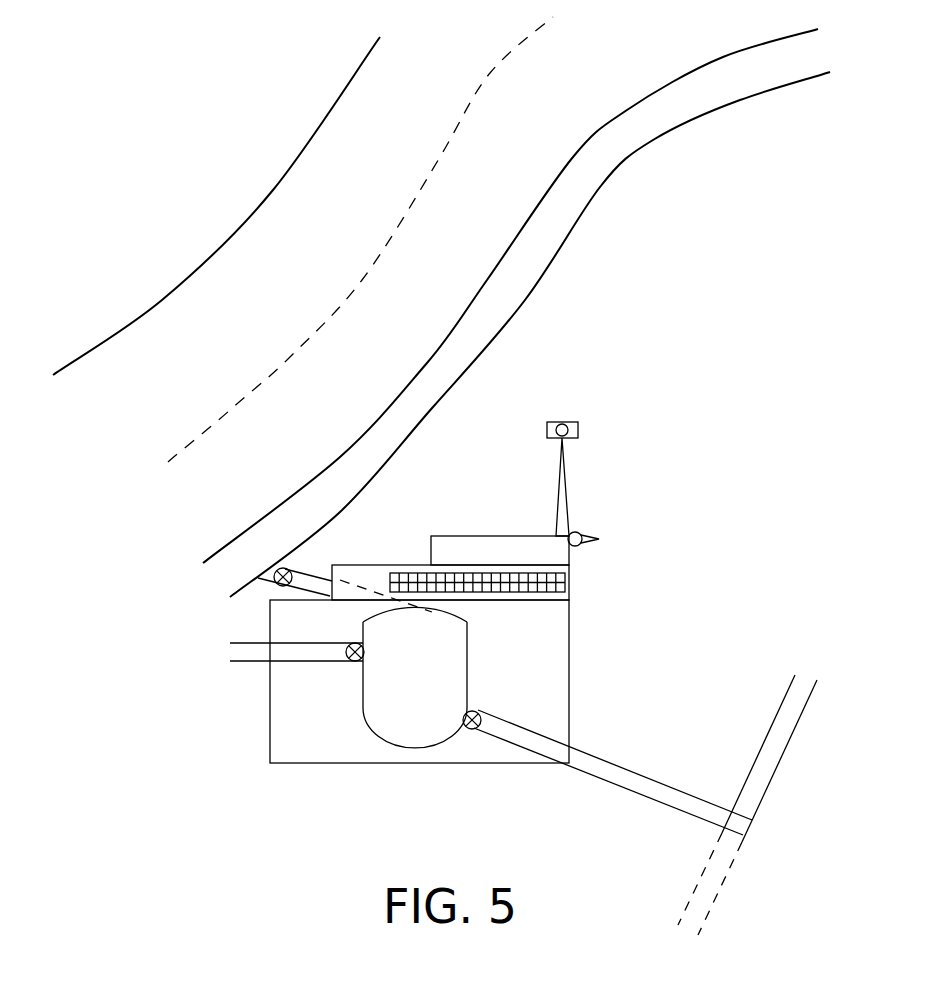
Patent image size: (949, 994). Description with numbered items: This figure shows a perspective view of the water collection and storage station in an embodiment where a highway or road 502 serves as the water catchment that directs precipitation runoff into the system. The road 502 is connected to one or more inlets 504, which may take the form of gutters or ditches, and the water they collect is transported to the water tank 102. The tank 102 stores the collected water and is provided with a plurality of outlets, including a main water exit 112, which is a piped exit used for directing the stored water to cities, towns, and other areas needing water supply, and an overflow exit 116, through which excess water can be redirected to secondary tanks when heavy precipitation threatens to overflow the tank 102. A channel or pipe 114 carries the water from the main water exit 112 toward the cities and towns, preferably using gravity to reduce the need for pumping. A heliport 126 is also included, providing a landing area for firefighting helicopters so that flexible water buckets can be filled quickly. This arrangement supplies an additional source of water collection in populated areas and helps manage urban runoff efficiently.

The highway or road 502 is at (543, 237).
The inlets 504 is at (277, 566).
The heliport 126 is at (532, 542).
The water tank 102 is at (431, 683).
The overflow exit 116 is at (250, 652).
The main water exit 112 is at (487, 722).
The channel or pipe 114 is at (775, 748).